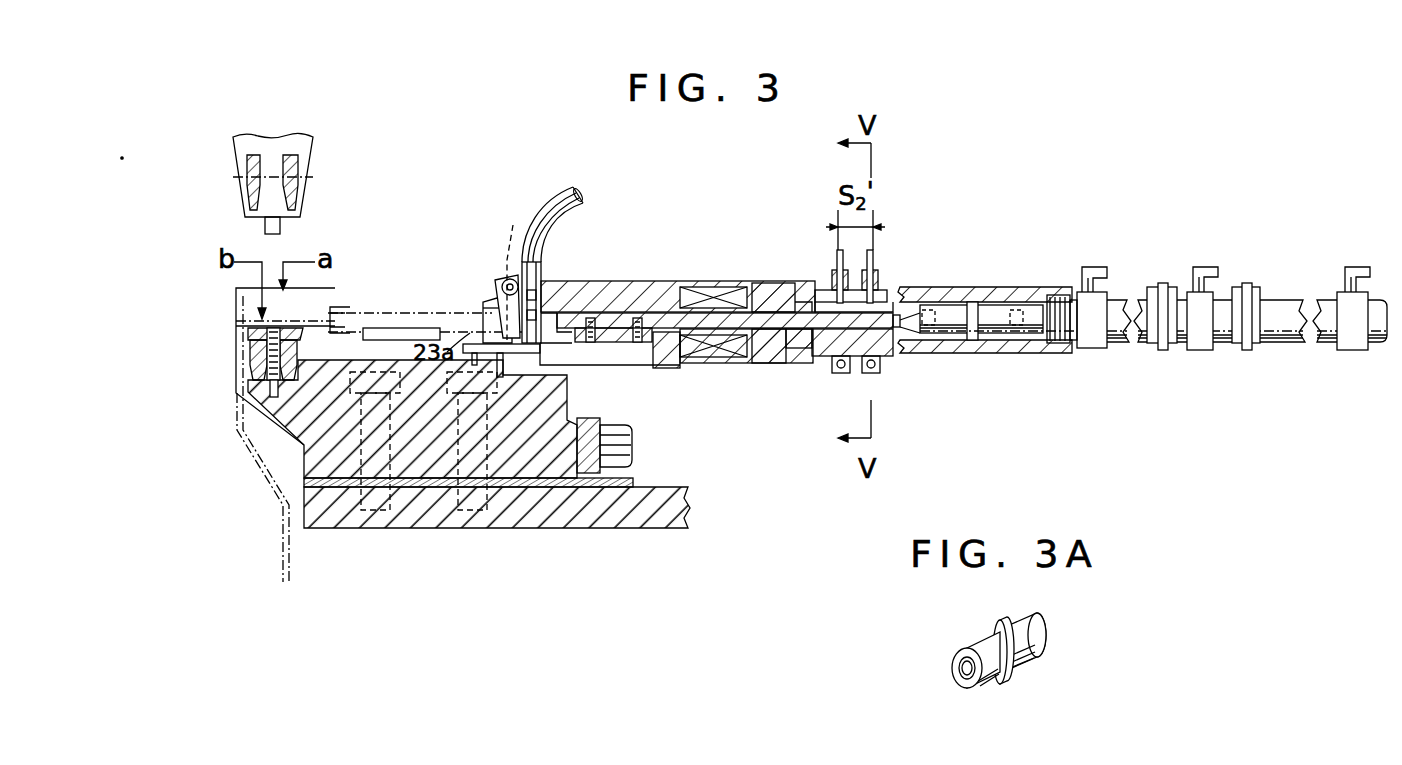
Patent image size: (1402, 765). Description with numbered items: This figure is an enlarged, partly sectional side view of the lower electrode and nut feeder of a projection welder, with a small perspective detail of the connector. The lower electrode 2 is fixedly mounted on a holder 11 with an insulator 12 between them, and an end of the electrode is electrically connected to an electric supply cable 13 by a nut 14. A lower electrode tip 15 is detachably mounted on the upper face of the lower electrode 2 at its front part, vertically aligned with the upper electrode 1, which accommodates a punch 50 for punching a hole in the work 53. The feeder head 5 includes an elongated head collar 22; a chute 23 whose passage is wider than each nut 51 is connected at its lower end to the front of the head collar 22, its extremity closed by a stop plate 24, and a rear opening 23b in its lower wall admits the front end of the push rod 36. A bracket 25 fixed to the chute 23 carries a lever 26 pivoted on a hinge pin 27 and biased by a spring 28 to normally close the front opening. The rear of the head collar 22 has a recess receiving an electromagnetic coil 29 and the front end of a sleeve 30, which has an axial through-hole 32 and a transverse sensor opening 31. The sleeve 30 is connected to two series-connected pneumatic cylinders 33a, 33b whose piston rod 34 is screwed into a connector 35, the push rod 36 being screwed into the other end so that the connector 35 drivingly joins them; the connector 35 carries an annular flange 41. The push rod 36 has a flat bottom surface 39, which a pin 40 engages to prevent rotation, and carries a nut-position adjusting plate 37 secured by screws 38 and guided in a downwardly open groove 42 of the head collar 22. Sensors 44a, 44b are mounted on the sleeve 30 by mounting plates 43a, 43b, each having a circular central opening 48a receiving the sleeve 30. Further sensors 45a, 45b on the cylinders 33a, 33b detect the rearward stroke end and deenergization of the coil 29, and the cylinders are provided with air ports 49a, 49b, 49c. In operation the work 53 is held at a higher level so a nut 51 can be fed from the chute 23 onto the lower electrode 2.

In FIG. 3, the upper electrode 1 is at (300, 143).
In FIG. 3, the lower electrode 2 is at (425, 460).
In FIG. 3, the feeder head 5 is at (491, 238).
In FIG. 3, the holder 11 is at (496, 510).
In FIG. 3, the insulator 12 is at (542, 488).
In FIG. 3, the electric supply cable 13 is at (590, 472).
In FIG. 3, the nut 14 is at (632, 445).
In FIG. 3, the lower electrode tip 15 is at (252, 355).
In FIG. 3, the head collar 22 is at (612, 280).
In FIG. 3, the chute 23 is at (560, 205).
In FIG. 3, the rear opening 23b is at (610, 342).
In FIG. 3, the stop plate 24 is at (498, 378).
In FIG. 3, the bracket 25 is at (485, 325).
In FIG. 3, the lever 26 is at (500, 304).
In FIG. 3, the hinge pin 27 is at (505, 286).
In FIG. 3, the spring 28 is at (497, 268).
In FIG. 3, the electromagnetic coil 29 is at (735, 262).
In FIG. 3, the sleeve 30 is at (760, 288).
In FIG. 3, the sensor opening 31 is at (828, 292).
In FIG. 3, the through-hole 32 is at (945, 303).
In FIG. 3, the pneumatically operable cylinder 33a is at (1118, 300).
In FIG. 3, the pneumatically operable cylinder 33b is at (1285, 300).
In FIG. 3, the piston rod 34 is at (1040, 325).
In FIG. 3, the connector 35 is at (992, 322).
In FIG. 3A, the connector 35 is at (968, 648).
In FIG. 3, the push rod 36 is at (795, 331).
In FIG. 3, the nut-position adjusting plate 37 is at (620, 345).
In FIG. 3, the screws 38 is at (591, 344).
In FIG. 3, the flat bottom surface 39 is at (820, 335).
In FIG. 3, the pin 40 is at (765, 355).
In FIG. 3A, the annular flange 41 is at (1020, 672).
In FIG. 3, the downwardly open groove 42 is at (662, 366).
In FIG. 3, the sensor mounting plate 43a is at (832, 272).
In FIG. 3, the sensor mounting plate 43b is at (880, 282).
In FIG. 3, the sensor 44a is at (838, 250).
In FIG. 3, the sensor 44b is at (873, 260).
In FIG. 3, the sensor 45a is at (1160, 283).
In FIG. 3, the sensor 45b is at (1248, 283).
In FIG. 3, the circular central opening 48a is at (880, 360).
In FIG. 3, the air port 49a is at (1086, 266).
In FIG. 3, the air port 49b is at (1196, 268).
In FIG. 3, the air port 49c is at (1345, 267).
In FIG. 3, the punch 50 is at (298, 167).
In FIG. 3, the nut 51 is at (250, 335).
In FIG. 3, the work 53 is at (256, 457).